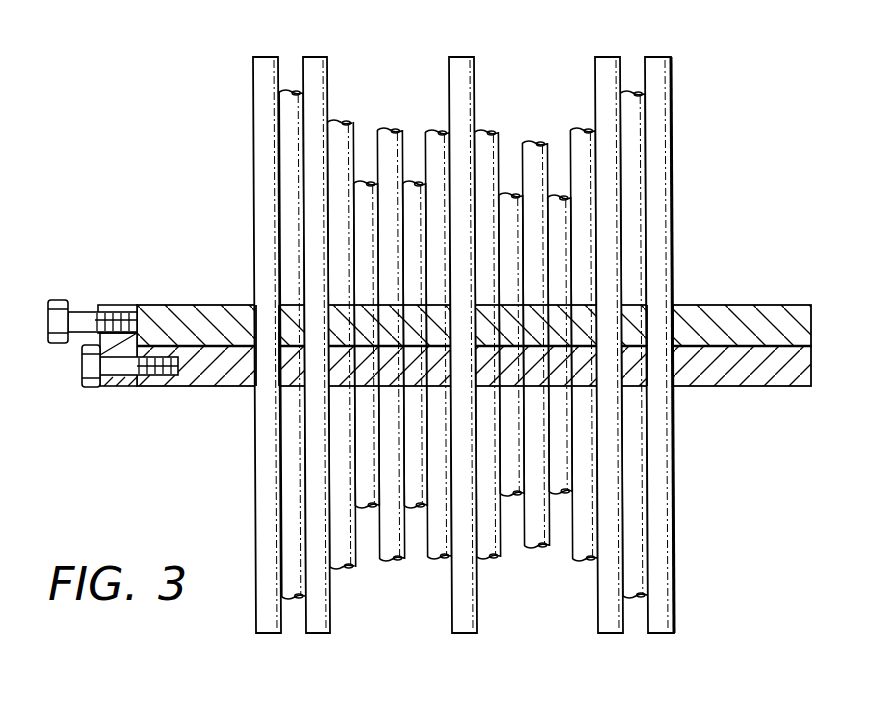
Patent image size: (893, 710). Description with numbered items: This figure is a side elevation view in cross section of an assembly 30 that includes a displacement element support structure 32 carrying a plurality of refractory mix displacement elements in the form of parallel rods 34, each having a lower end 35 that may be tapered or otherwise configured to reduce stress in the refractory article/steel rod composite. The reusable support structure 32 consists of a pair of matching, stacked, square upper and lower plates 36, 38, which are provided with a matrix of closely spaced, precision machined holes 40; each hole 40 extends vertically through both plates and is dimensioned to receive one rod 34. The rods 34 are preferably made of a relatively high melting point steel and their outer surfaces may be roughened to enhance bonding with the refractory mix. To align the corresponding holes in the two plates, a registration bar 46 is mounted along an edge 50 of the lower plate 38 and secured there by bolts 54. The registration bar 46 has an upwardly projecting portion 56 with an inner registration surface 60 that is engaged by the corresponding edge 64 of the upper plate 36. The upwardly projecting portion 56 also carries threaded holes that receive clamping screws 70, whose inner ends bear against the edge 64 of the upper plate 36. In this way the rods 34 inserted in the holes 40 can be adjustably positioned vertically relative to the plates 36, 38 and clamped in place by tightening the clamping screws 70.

The assembly 30 is at (183, 167).
The displacement element support structure 32 is at (502, 352).
The rods 34 is at (328, 79).
The lower end 35 is at (257, 612).
The upper plate 36 is at (773, 304).
The lower plate 38 is at (777, 387).
The holes 40 is at (257, 306).
The registration bar 46 is at (116, 387).
The edge 50 is at (137, 381).
The bolts 54 is at (80, 368).
The upwardly projecting portion 56 is at (108, 305).
The inner registration surface 60 is at (140, 333).
The edge 64 is at (121, 306).
The clamping screws 70 is at (48, 316).